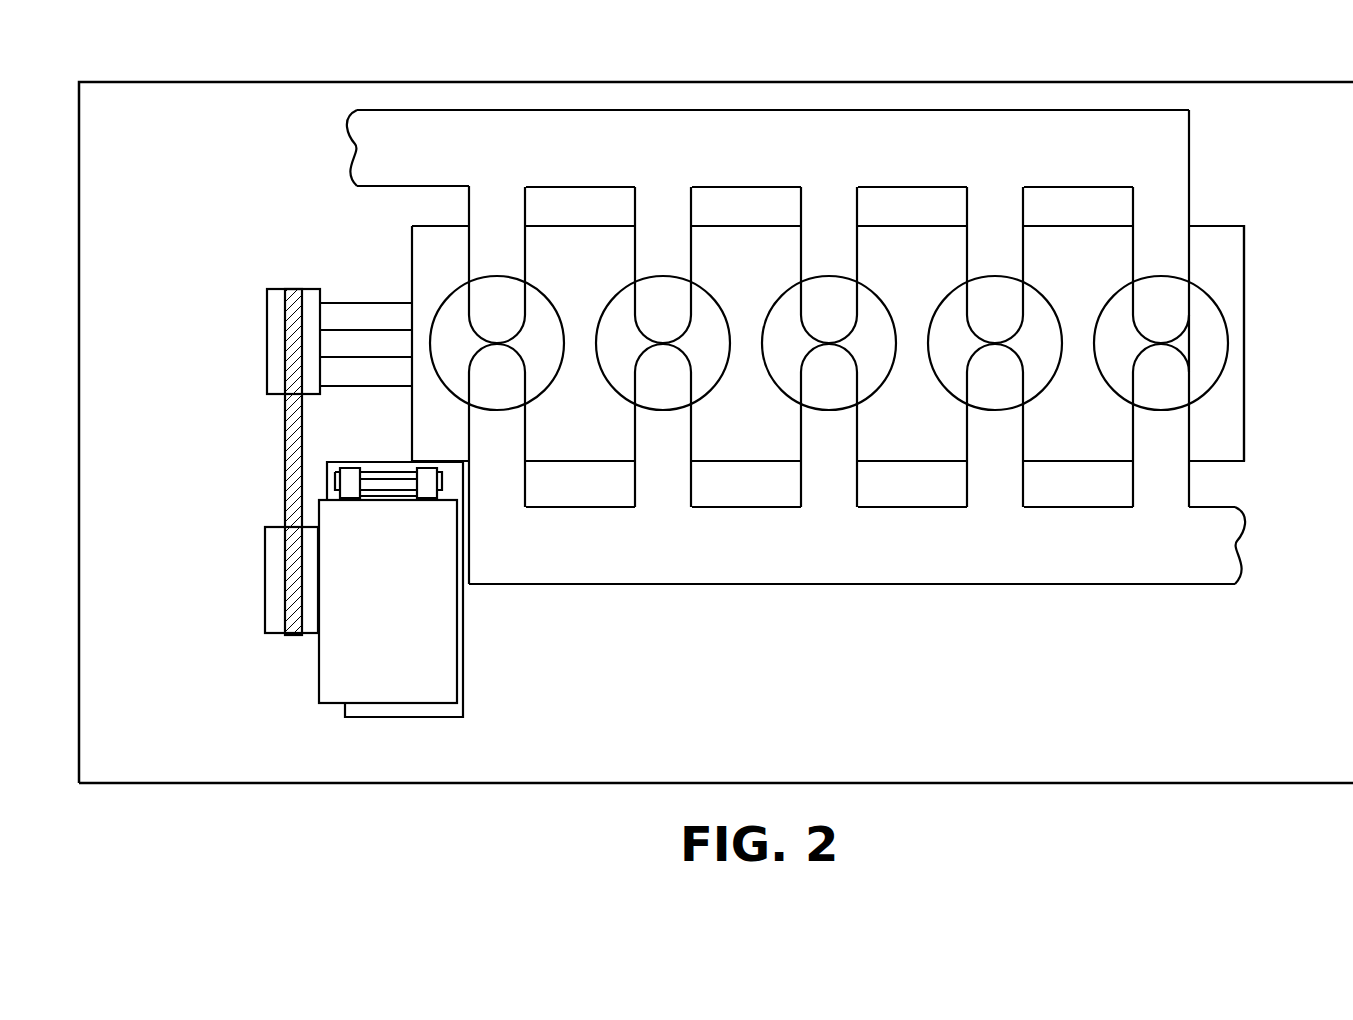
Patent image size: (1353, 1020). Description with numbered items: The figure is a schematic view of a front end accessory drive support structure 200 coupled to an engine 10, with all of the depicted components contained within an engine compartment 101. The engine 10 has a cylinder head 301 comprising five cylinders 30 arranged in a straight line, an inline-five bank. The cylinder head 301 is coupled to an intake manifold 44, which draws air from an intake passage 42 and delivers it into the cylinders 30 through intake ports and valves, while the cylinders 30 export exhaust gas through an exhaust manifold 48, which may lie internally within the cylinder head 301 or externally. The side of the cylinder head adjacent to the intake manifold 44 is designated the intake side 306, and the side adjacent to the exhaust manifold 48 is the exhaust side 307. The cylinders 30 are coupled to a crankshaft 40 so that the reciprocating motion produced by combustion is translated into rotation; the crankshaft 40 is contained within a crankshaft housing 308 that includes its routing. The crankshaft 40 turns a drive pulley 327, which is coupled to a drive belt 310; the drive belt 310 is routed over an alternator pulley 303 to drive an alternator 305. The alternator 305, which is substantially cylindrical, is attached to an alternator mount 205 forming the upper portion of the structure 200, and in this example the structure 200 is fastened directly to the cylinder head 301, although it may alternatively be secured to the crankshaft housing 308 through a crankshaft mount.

The engine compartment 101 is at (266, 60).
The engine 10 is at (1259, 364).
The cylinders 30 is at (829, 385).
The crankshaft 40 is at (366, 344).
The intake passage 42 is at (768, 148).
The intake manifold 44 is at (857, 308).
The exhaust manifold 48 is at (857, 545).
The front end accessory drive support structure 200 is at (489, 632).
The alternator mount 205 is at (392, 718).
The cylinder head 301 is at (399, 470).
The alternator pulley 303 is at (265, 548).
The alternator 305 is at (388, 601).
The intake side 306 is at (1247, 173).
The exhaust side 307 is at (1260, 489).
The crankshaft housing 308 is at (376, 302).
The drive belt 310 is at (290, 288).
The drive pulley 327 is at (266, 318).